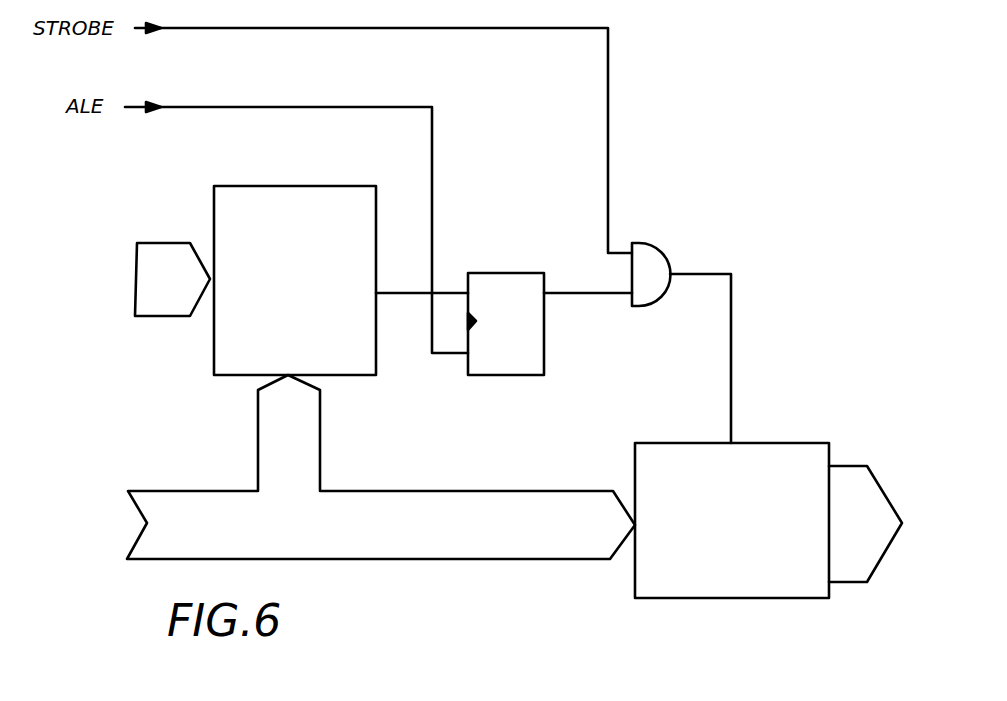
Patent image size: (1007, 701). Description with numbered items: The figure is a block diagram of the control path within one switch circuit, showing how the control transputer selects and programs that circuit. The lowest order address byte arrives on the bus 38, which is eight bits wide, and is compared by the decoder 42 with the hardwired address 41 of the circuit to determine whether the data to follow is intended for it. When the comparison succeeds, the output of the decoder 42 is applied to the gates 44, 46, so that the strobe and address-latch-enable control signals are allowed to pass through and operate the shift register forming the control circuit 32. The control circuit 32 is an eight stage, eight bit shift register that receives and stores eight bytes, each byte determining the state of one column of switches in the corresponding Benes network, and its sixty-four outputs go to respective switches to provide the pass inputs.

The hardwired address 41 is at (170, 243).
The decoder 42 is at (376, 375).
The gate 44 is at (500, 273).
The gate 46 is at (660, 258).
The control circuit 32 is at (786, 443).
The data bus 38 is at (377, 541).